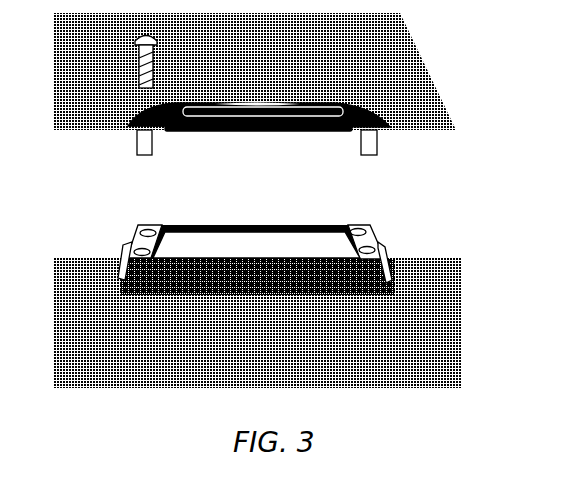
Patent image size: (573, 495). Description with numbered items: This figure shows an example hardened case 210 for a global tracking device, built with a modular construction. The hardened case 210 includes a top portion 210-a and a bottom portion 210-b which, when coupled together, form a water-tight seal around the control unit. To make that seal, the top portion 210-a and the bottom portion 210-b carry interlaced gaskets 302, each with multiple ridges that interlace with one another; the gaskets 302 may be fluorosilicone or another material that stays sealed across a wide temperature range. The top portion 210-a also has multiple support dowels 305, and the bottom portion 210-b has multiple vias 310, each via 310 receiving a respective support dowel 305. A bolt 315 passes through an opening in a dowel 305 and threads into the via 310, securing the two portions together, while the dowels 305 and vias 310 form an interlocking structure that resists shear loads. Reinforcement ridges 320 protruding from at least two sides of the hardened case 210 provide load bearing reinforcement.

The hardened case 210 is at (425, 60).
The top portion 210-a is at (333, 100).
The bottom portion 210-b is at (390, 243).
The interlaced gaskets 302 is at (213, 131).
The support dowels 305 is at (133, 135).
The vias 310 is at (127, 228).
The bolt 315 is at (127, 62).
The reinforcement ridges 320 is at (298, 132).